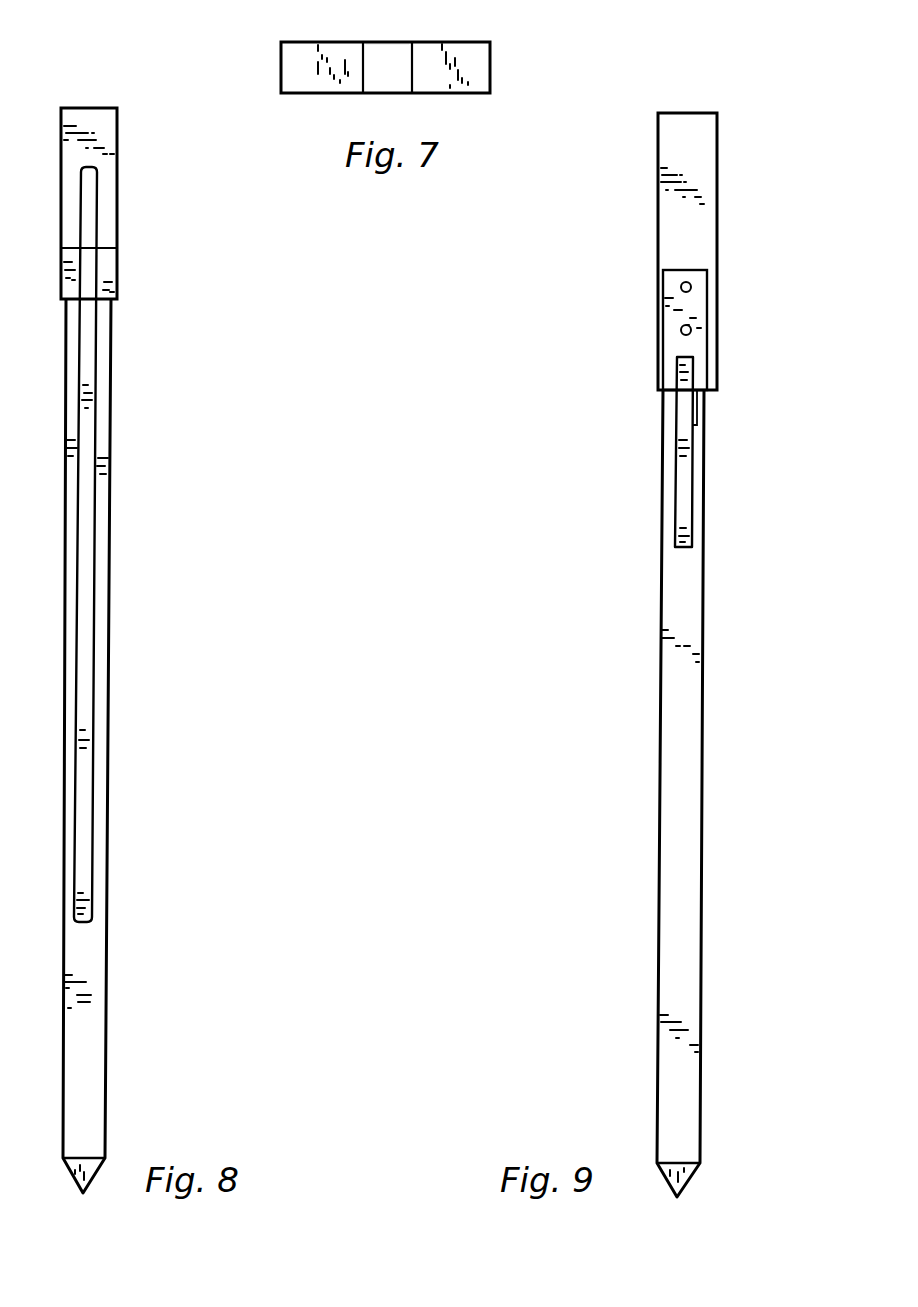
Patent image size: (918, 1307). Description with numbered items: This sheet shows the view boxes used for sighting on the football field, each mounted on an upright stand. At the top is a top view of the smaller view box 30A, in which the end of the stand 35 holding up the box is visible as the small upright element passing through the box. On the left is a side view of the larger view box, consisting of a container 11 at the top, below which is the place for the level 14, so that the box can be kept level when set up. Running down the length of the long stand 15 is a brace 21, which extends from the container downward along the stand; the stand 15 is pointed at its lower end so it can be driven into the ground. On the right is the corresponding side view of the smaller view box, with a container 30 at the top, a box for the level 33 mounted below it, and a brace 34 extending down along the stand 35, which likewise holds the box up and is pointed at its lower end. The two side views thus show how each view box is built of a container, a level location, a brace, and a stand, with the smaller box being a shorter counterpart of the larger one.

In FIG. 7, the smaller view box 30A is at (455, 42).
In FIG. 7, the stand 35 is at (397, 80).
In FIG. 9, the stand 35 is at (704, 716).
In FIG. 8, the container 11 is at (117, 178).
In FIG. 8, the place for the level 14 is at (117, 267).
In FIG. 8, the brace 21 is at (85, 605).
In FIG. 8, the stand 15 is at (105, 942).
In FIG. 9, the container 30 is at (717, 170).
In FIG. 9, the box for the level 33 is at (658, 378).
In FIG. 9, the brace 34 is at (700, 330).